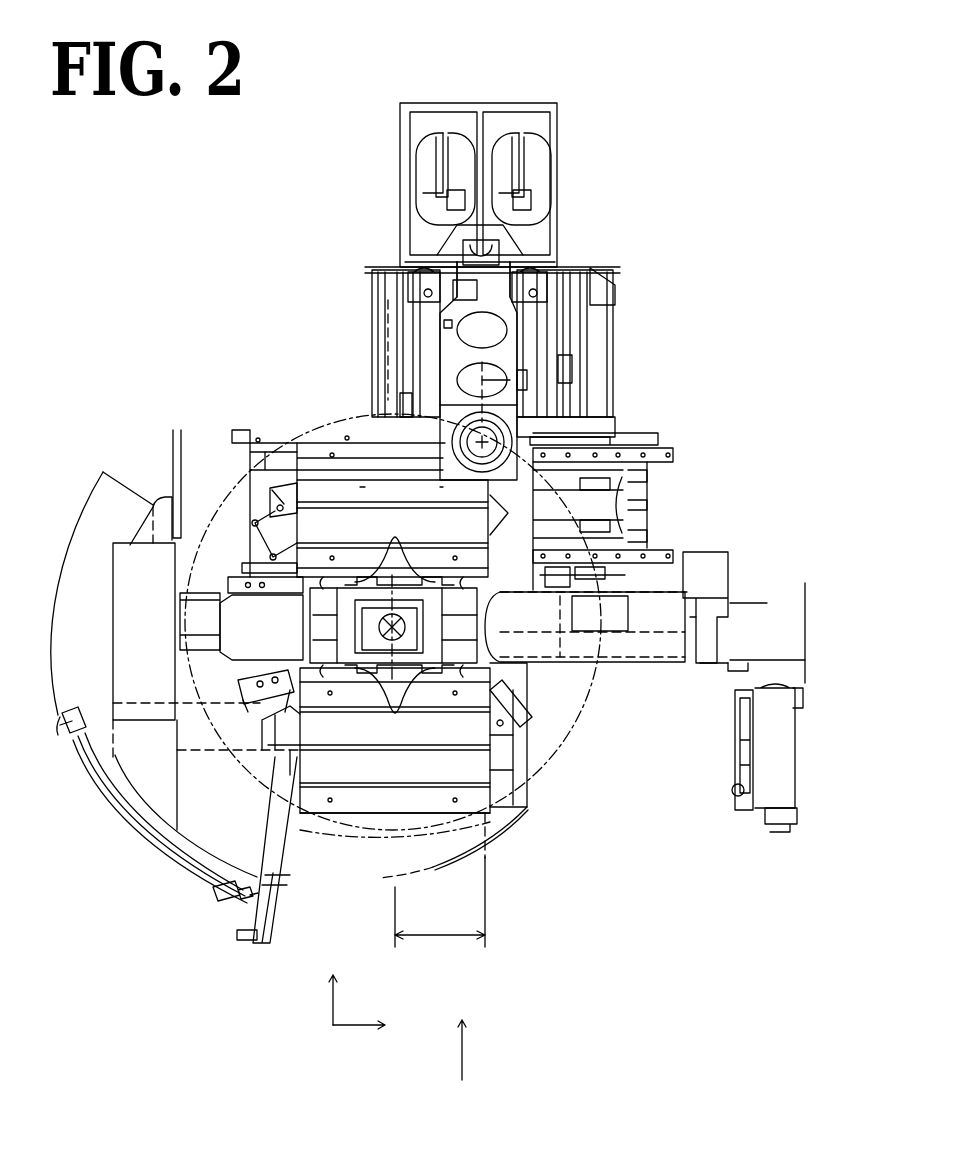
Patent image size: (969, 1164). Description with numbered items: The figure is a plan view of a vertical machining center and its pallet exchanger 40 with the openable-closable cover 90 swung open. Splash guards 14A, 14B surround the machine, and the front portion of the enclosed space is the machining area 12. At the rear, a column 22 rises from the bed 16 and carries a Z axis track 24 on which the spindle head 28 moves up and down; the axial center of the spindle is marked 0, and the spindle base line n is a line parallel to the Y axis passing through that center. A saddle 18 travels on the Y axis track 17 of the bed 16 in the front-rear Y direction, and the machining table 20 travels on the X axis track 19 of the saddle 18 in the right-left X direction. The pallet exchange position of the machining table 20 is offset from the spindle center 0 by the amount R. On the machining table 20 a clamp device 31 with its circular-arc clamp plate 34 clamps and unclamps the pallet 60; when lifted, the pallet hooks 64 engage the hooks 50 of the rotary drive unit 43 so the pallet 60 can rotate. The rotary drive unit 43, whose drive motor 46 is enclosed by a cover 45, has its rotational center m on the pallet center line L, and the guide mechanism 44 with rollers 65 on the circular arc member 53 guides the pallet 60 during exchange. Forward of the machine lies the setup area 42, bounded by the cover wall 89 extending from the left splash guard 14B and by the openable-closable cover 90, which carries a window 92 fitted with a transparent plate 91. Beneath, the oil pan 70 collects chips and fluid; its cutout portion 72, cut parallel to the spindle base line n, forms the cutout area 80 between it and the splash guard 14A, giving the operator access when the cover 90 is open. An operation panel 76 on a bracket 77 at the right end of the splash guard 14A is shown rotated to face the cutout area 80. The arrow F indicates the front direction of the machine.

The machining area 12 is at (213, 441).
The splash guard 14A is at (738, 666).
The splash guard 14B is at (172, 445).
The bed 16 is at (612, 320).
The Y axis track 17 is at (380, 328).
The saddle 18 is at (614, 430).
The X axis track 19 is at (666, 454).
The machining table 20 is at (254, 461).
The column 22 is at (560, 185).
The Z axis track 24 is at (372, 280).
The spindle head 28 is at (440, 361).
The clamp device 31 is at (238, 515).
The clamp plate 34 is at (277, 504).
The pallet exchanger 40 is at (330, 836).
The setup area 42 is at (542, 825).
The rotary drive unit 43 is at (320, 630).
The guide mechanism 44 is at (228, 721).
The cover 45 is at (455, 605).
The drive motor 46 is at (430, 640).
The hooks 50 is at (391, 558).
The circular arc member 53 is at (285, 717).
The pallet 60 is at (333, 452).
The hooks 64 is at (325, 568).
The rollers 65 is at (240, 688).
The oil pan 70 is at (495, 824).
The cutout portion 72 is at (535, 745).
The operation panel 76 is at (735, 760).
The bracket 77 is at (771, 670).
The cutout area 80 is at (552, 696).
The cover wall 89 is at (111, 640).
The openable-closable cover 90 is at (74, 622).
The transparent plate 91 is at (128, 828).
The window 92 is at (219, 894).
The axial center of the spindle 0 is at (458, 469).
The center line L is at (363, 487).
The rotational center m is at (375, 633).
The spindle base line n is at (530, 379).
The amount of offset R is at (440, 902).
The X axis direction X is at (370, 1025).
The Y axis direction Y is at (332, 984).
The front direction F is at (469, 1050).